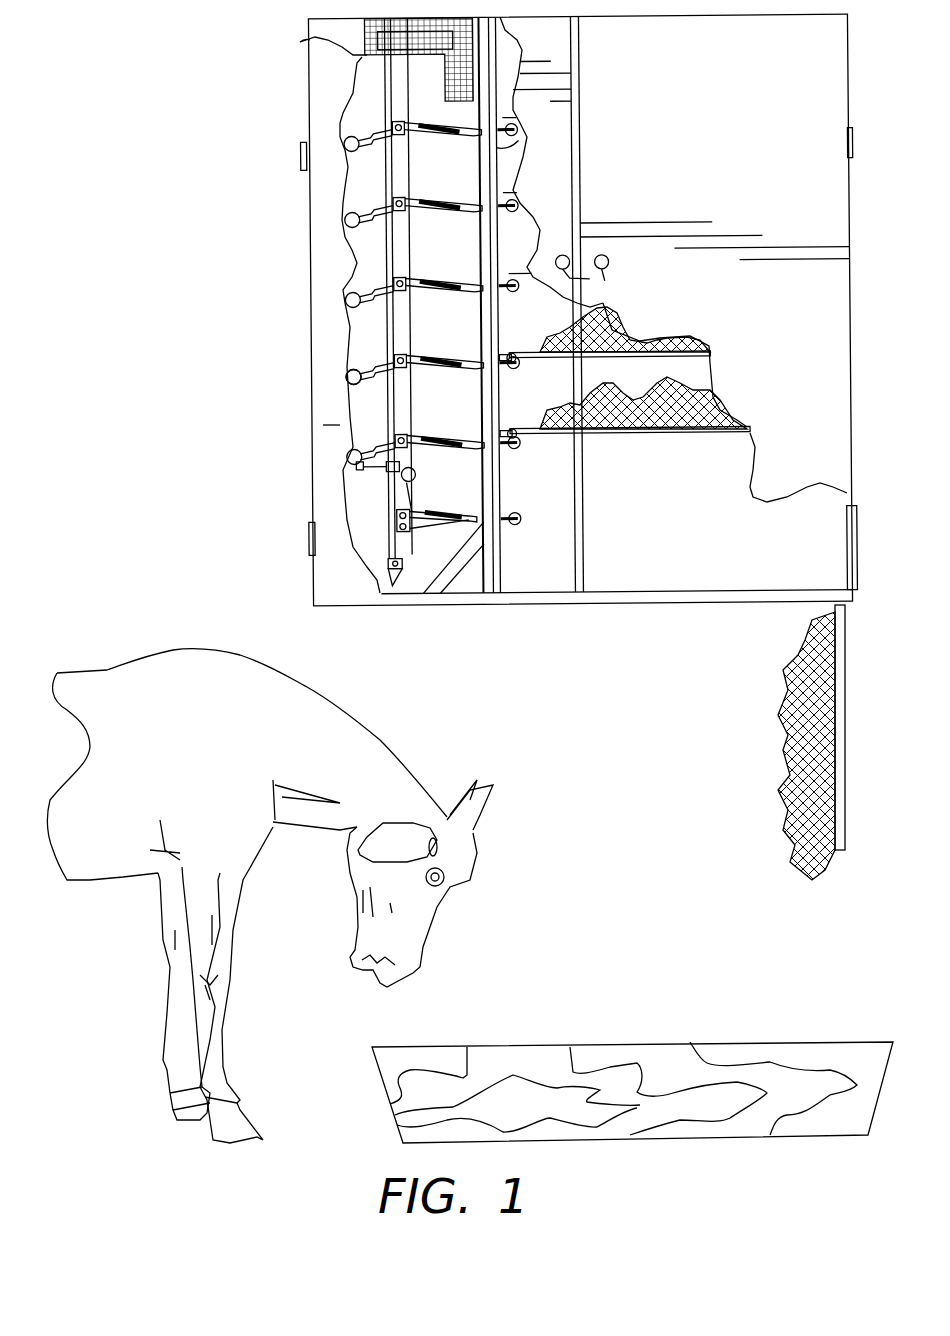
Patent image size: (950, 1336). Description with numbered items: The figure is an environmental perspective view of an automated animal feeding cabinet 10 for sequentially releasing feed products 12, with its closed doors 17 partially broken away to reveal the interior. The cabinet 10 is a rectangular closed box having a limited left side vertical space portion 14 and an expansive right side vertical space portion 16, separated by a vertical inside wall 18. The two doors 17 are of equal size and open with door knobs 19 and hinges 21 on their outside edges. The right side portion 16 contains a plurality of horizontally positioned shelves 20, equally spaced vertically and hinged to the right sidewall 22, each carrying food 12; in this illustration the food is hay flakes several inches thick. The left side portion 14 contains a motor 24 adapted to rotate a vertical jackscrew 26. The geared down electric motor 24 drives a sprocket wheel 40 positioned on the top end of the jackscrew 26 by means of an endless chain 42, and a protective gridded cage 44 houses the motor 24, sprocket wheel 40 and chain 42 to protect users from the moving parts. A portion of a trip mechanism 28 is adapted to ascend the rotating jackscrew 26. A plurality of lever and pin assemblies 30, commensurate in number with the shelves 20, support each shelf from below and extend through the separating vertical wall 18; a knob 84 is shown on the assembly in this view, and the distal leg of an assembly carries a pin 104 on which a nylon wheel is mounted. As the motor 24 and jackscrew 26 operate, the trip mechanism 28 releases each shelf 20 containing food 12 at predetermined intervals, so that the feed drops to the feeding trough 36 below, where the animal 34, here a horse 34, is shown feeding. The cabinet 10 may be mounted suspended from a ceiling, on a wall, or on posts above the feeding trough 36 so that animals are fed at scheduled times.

The automated animal feeding cabinet 10 is at (212, 236).
The feed products 12 is at (600, 386).
The left side vertical space portion 14 is at (459, 338).
The right side vertical space portion 16 is at (663, 526).
The doors 17 is at (342, 85).
The vertical inside wall 18 is at (485, 560).
The door knobs 19 is at (592, 279).
The shelves 20 is at (668, 434).
The hinges 21 is at (302, 155).
The right sidewall 22 is at (847, 503).
The motor 24 is at (490, 58).
The vertical jackscrew 26 is at (388, 85).
The trip mechanism 28 is at (378, 470).
The lever and pin assemblies 30 is at (456, 365).
The animal 34 is at (430, 767).
The feeding trough 36 is at (652, 1043).
The sprocket wheel 40 is at (300, 42).
The endless chain 42 is at (418, 60).
The protective gridded cage 44 is at (455, 106).
The knob 84 is at (345, 363).
The pin 104 is at (520, 442).